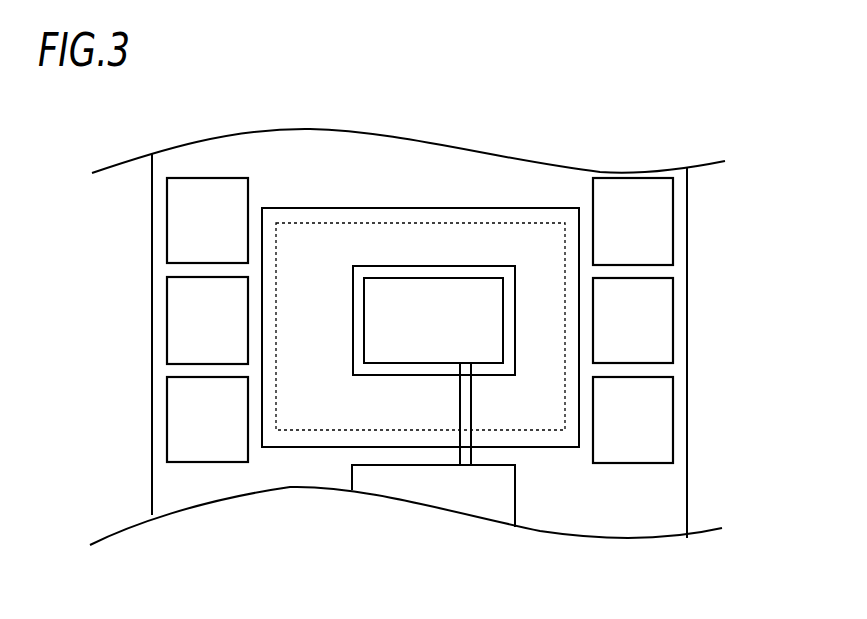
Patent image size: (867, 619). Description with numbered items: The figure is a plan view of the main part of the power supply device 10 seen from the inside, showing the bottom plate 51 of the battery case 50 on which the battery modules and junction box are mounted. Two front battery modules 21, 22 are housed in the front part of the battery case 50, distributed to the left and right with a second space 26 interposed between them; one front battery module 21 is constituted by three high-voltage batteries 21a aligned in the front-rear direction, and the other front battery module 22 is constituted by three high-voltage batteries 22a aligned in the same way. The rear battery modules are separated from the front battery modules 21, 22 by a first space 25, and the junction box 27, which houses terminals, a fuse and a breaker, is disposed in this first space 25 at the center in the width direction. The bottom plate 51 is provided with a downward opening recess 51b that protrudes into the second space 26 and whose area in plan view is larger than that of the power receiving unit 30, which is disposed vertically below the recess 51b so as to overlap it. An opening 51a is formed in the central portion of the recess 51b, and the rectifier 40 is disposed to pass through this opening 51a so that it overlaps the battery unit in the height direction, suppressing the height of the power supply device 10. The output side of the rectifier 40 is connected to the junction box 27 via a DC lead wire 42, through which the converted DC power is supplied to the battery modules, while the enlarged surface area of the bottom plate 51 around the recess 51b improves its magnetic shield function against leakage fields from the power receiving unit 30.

The power supply device 10 is at (419, 337).
The battery case 50 is at (146, 453).
The front battery module 21 is at (143, 320).
The high-voltage battery 21a is at (167, 405).
The front battery module 22 is at (685, 320).
The high-voltage battery 22a is at (673, 398).
The first space 25 is at (609, 502).
The second space 26 is at (349, 236).
The junction box 27 is at (517, 498).
The power receiving unit 30 is at (503, 222).
The rectifier 40 is at (507, 304).
The DC lead wire 42 is at (458, 402).
The bottom plate 51 is at (512, 335).
The opening 51a is at (370, 329).
The downward opening recess 51b is at (428, 208).